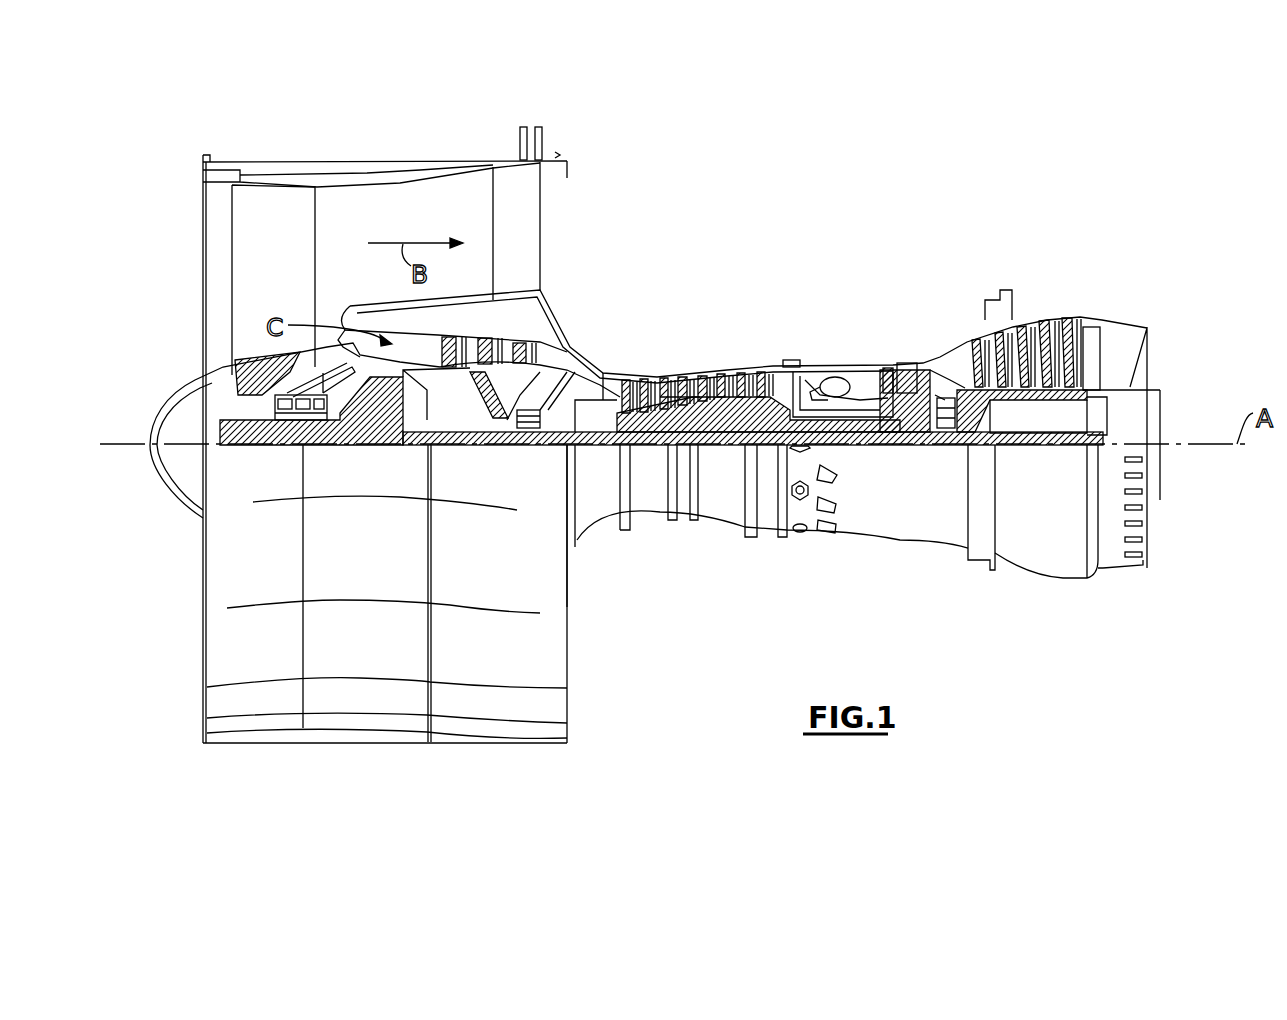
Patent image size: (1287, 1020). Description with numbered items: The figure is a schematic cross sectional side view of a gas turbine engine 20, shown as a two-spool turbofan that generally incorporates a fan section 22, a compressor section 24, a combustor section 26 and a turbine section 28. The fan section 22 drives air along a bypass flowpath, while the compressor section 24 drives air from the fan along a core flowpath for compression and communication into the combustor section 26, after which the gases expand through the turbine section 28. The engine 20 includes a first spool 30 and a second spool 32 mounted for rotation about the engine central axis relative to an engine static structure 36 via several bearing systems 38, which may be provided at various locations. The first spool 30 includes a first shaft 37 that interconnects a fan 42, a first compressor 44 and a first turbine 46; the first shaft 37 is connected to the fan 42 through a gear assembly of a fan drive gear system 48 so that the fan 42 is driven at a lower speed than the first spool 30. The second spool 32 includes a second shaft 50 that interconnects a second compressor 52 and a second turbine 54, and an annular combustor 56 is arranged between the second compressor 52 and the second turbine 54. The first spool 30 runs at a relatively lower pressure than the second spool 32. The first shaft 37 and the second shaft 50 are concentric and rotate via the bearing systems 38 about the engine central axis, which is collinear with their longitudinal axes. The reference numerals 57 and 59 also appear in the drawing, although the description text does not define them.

The gas turbine engine 20 is at (843, 212).
The fan section 22 is at (318, 155).
The compressor section 24 is at (617, 352).
The combustor section 26 is at (838, 344).
The turbine section 28 is at (987, 308).
The first spool 30 is at (723, 445).
The second spool 32 is at (767, 380).
The engine static structure 36 is at (765, 533).
The first shaft 37 is at (583, 447).
The bearing systems 38 is at (297, 407).
The fan 42 is at (292, 289).
The first compressor 44 is at (500, 340).
The first turbine 46 is at (1033, 340).
The fan drive gear system 48 is at (393, 423).
The second shaft 50 is at (850, 423).
The second compressor 52 is at (700, 410).
The second turbine 54 is at (903, 360).
The annular combustor 56 is at (837, 387).
The mid-turbine frame 57 is at (947, 353).
The airfoils 59 is at (980, 412).